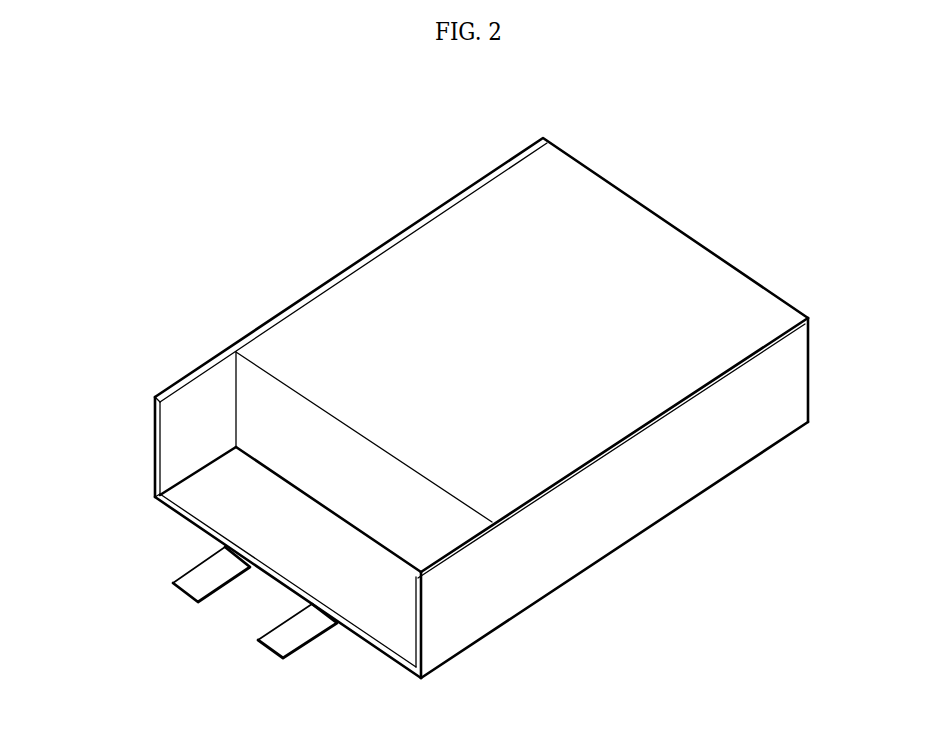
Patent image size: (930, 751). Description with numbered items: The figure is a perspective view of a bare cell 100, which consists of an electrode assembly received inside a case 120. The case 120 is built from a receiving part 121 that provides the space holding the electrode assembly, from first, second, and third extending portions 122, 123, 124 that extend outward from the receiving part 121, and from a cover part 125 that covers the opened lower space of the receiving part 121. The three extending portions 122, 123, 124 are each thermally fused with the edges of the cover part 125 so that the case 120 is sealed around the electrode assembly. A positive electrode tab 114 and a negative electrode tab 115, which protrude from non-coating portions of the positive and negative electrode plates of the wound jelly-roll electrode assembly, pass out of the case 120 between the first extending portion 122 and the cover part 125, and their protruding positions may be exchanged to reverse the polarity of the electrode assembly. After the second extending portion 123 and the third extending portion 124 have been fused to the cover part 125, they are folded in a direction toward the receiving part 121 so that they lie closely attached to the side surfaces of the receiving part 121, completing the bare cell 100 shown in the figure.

The bare cell 100 is at (355, 200).
The positive electrode tab 114 is at (196, 577).
The negative electrode tab 115 is at (283, 638).
The case 120 is at (786, 284).
The receiving part 121 is at (642, 228).
The first extending portion 122 is at (385, 638).
The second extending portion 123 is at (180, 411).
The third extending portion 124 is at (594, 545).
The cover part 125 is at (773, 446).